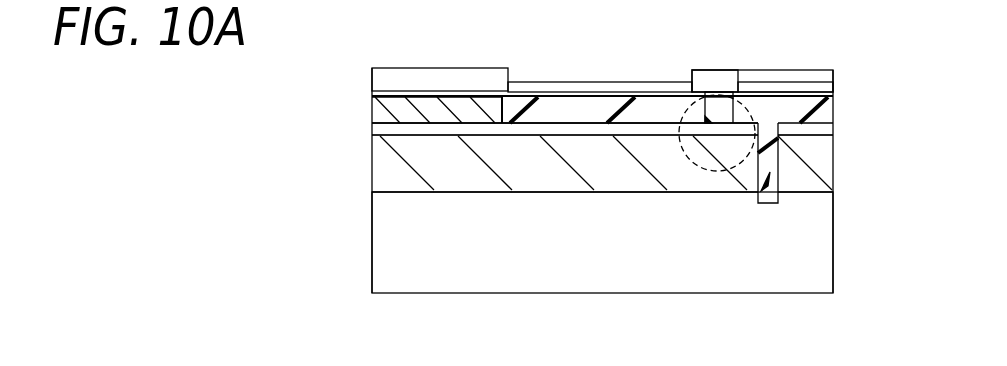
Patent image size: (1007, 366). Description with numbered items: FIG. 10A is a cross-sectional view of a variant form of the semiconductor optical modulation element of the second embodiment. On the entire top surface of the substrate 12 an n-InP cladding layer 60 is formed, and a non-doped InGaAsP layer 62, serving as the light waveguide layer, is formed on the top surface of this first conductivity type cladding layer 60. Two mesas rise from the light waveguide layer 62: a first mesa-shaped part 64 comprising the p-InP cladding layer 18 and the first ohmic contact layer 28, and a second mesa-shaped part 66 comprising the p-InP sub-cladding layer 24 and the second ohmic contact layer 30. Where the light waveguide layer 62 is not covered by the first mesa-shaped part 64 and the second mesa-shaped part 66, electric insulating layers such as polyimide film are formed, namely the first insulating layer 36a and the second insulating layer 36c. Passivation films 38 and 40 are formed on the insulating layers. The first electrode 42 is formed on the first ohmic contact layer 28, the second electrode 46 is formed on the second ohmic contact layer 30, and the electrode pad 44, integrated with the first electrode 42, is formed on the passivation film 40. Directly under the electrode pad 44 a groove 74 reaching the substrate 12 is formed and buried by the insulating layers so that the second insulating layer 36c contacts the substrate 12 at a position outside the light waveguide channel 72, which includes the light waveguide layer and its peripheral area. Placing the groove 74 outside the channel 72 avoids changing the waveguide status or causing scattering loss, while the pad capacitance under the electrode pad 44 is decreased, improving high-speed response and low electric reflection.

The substrate 12 is at (830, 233).
The p-InP cladding layer 18 is at (718, 108).
The p-InP sub-cladding layer 24 is at (438, 110).
The first ohmic contact layer 28 is at (721, 108).
The second ohmic contact layer 30 is at (429, 98).
The first insulating layer 36a is at (542, 117).
The second insulating layer 36c is at (823, 115).
The passivation film 38 is at (572, 85).
The passivation film 40 is at (834, 85).
The first electrode 42 is at (738, 64).
The electrode pad 44 is at (833, 64).
The second electrode 46 is at (378, 80).
The n-InP cladding layer 60 is at (822, 183).
The non-doped InGaAsP layer 62 is at (822, 134).
The first mesa-shaped part 64 is at (758, 329).
The second mesa-shaped part 66 is at (475, 326).
The light waveguide channel 72 is at (750, 160).
The groove 74 is at (781, 172).